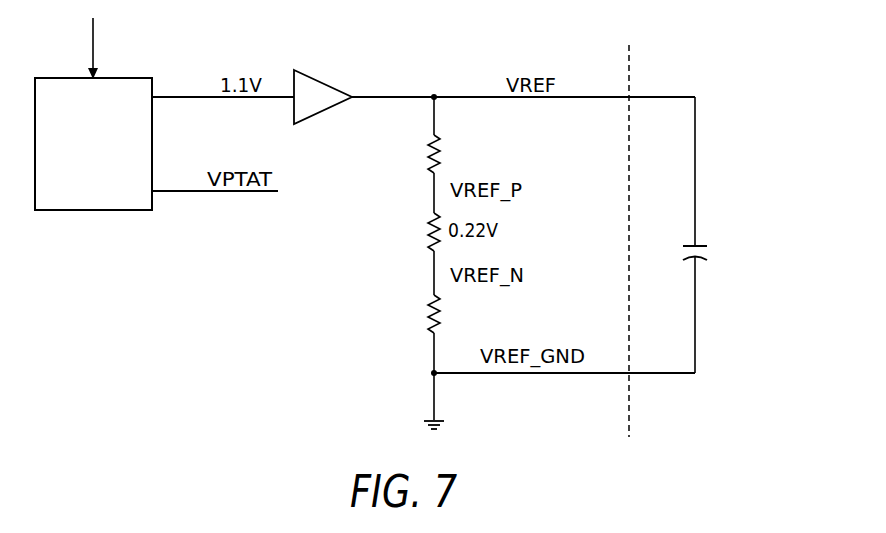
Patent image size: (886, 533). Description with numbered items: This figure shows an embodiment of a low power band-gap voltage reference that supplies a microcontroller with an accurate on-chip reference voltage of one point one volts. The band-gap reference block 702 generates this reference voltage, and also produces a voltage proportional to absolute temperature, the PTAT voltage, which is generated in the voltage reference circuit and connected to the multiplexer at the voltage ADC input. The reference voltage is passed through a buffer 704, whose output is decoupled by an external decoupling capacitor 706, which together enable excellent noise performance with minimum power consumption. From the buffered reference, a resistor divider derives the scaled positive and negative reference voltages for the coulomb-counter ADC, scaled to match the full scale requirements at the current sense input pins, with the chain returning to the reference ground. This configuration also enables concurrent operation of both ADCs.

The bandgap (BG) reference 702 is at (97, 211).
The buffer 704 is at (319, 80).
The external decoupling capacitor 706 is at (698, 243).